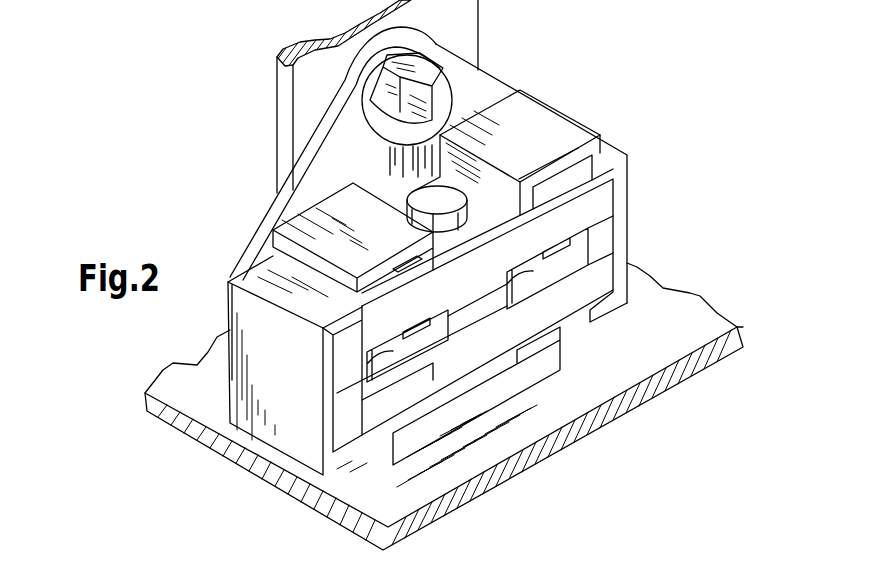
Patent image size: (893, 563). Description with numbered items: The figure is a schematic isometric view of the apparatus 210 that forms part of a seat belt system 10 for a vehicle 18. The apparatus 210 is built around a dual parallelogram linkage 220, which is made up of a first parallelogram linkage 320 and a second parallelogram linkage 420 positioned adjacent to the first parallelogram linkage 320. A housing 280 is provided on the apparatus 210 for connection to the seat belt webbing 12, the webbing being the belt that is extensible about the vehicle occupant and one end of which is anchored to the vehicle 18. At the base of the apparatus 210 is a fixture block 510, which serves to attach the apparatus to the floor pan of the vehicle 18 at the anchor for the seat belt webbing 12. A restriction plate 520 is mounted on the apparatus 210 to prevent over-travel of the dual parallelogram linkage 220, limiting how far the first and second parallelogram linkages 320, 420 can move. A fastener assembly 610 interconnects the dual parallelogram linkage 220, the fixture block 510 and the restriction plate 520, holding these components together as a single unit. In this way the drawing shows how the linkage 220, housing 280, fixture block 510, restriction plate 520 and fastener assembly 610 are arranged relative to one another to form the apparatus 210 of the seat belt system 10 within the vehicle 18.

The seat belt system 10 is at (697, 90).
The seat belt webbing 12 is at (460, 17).
The vehicle 18 is at (697, 320).
The apparatus 210 is at (700, 125).
The dual parallelogram linkage 220 is at (653, 172).
The housing 280 is at (250, 227).
The first parallelogram linkage 320 is at (363, 465).
The second parallelogram linkage 420 is at (600, 327).
The fixture block 510 is at (447, 408).
The restriction plate 520 is at (557, 123).
The fastener assembly 610 is at (432, 203).